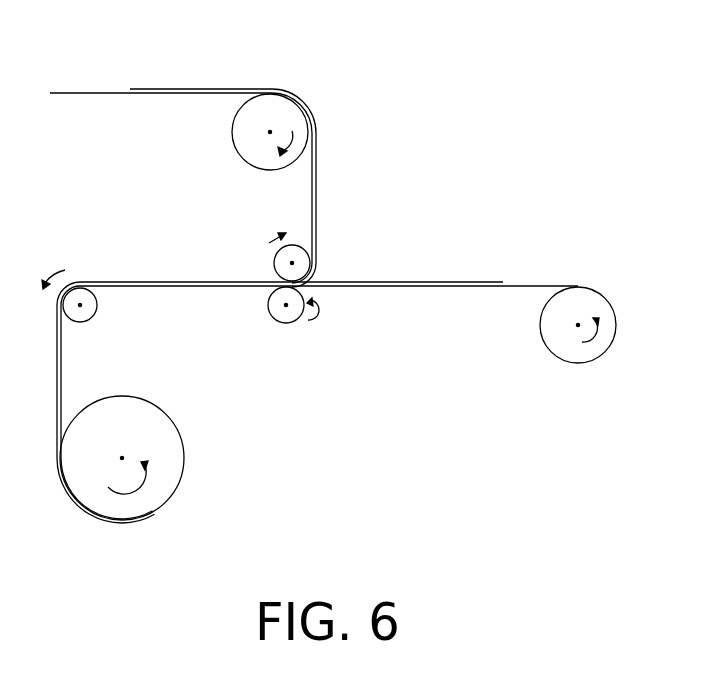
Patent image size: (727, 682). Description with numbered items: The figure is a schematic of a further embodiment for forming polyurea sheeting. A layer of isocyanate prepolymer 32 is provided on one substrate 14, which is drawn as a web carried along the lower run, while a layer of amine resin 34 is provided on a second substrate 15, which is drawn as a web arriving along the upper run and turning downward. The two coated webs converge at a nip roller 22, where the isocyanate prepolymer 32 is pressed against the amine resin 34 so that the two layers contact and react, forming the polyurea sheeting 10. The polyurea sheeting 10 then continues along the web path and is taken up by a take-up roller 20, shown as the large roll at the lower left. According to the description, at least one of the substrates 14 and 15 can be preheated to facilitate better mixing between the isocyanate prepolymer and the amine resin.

The polyurea sheeting 10 is at (180, 293).
The substrate 15 is at (86, 99).
The amine resin 34 is at (196, 82).
The isocyanate prepolymer 32 is at (454, 273).
The nip roller 22 is at (277, 273).
The substrate 14 is at (548, 278).
The take-up roller 20 is at (152, 513).